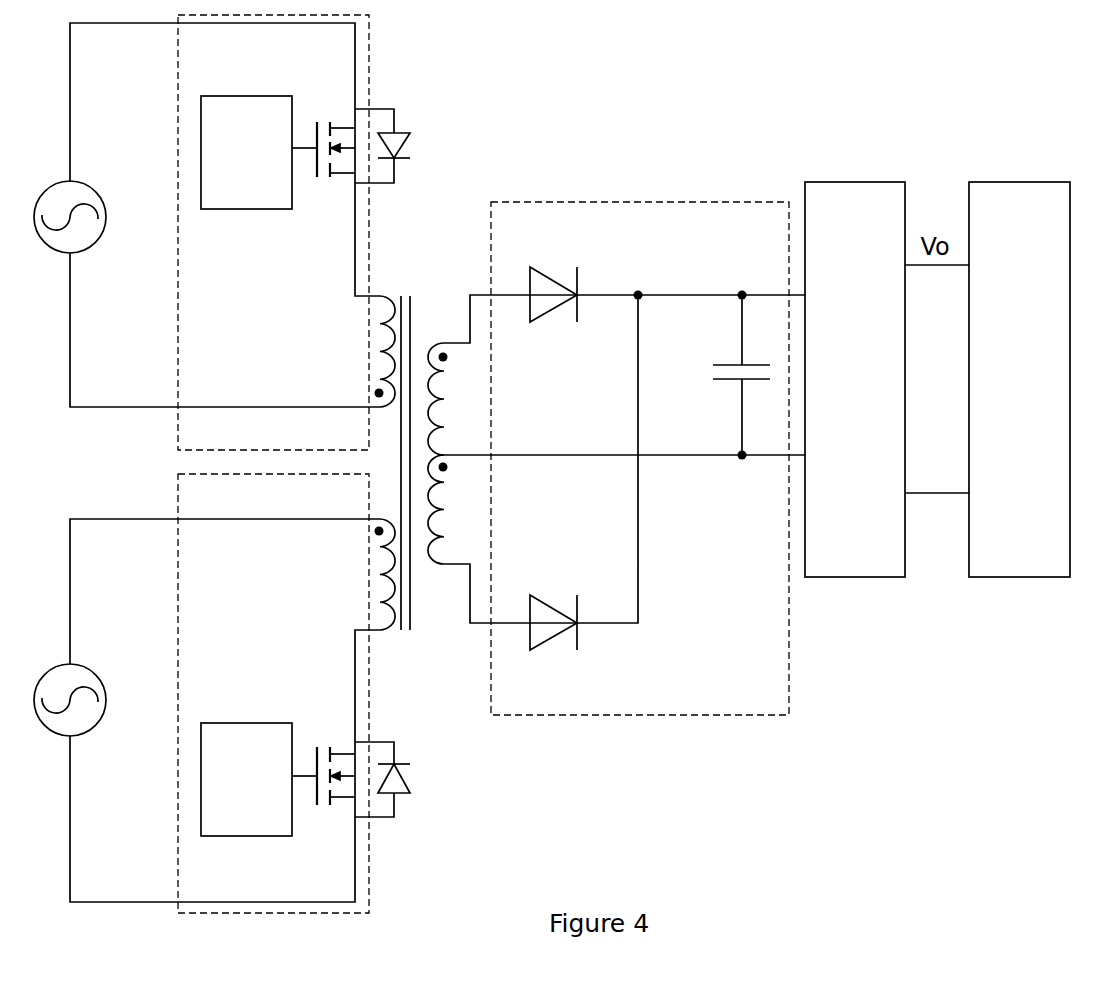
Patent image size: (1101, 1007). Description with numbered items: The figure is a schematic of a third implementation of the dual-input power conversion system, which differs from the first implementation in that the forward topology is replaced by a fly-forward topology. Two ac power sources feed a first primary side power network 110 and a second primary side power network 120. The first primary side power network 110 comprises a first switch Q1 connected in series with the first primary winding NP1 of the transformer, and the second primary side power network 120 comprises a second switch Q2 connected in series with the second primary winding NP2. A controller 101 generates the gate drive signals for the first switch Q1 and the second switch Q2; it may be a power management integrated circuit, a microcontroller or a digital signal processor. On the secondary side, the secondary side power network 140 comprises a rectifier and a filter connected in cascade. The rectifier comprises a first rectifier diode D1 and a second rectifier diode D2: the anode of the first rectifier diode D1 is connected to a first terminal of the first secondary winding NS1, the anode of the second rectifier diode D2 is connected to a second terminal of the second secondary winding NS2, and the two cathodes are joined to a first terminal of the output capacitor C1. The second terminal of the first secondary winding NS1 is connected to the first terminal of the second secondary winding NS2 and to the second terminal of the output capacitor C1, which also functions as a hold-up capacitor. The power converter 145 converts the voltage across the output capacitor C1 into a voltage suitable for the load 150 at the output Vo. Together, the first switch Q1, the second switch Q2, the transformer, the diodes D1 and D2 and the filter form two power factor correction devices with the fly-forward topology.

The controller 101 is at (268, 167).
The first primary side power network 110 is at (241, 445).
The second primary side power network 120 is at (241, 507).
The secondary side power network 140 is at (760, 708).
The power converter 145 is at (834, 393).
The load 150 is at (999, 393).
The first switch Q1 is at (351, 164).
The second switch Q2 is at (351, 795).
The first primary winding NP1 is at (357, 351).
The second primary winding NP2 is at (357, 574).
The first secondary winding NS1 is at (466, 399).
The second secondary winding NS2 is at (466, 509).
The first rectifier diode D1 is at (553, 272).
The second rectifier diode D2 is at (553, 649).
The output capacitor C1 is at (721, 375).